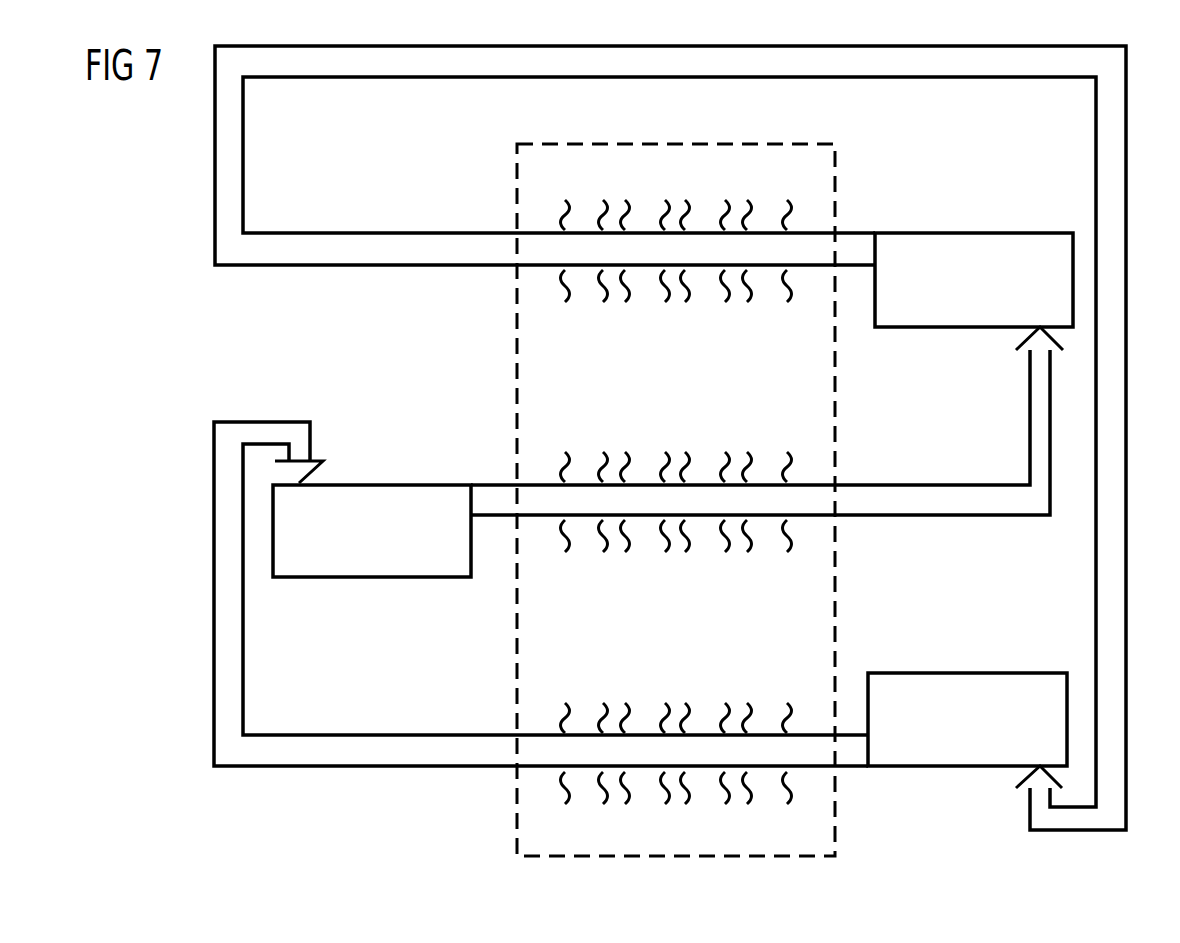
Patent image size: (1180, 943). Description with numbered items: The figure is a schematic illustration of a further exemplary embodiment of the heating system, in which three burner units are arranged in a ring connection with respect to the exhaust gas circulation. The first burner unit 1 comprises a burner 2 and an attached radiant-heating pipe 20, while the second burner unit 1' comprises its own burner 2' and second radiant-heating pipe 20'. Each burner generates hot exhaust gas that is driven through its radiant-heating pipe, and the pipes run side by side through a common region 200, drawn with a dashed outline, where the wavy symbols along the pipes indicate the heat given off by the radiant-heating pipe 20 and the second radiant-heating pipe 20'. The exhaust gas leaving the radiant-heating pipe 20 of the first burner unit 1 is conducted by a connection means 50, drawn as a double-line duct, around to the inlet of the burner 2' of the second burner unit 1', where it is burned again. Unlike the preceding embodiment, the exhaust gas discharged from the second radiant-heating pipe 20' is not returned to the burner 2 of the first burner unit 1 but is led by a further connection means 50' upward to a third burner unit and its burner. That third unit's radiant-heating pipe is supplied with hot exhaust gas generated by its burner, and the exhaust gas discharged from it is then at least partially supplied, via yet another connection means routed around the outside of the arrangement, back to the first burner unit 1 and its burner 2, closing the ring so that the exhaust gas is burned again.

The first burner unit 1 is at (967, 740).
The second burner unit 1' is at (372, 479).
The burner 2 is at (967, 693).
The burner 2' is at (372, 505).
The radiant-heating pipe 20 is at (676, 771).
The second radiant-heating pipe 20' is at (676, 484).
The connection means 50 is at (516, 594).
The connection means 50' is at (767, 421).
The heating region 200 is at (695, 387).